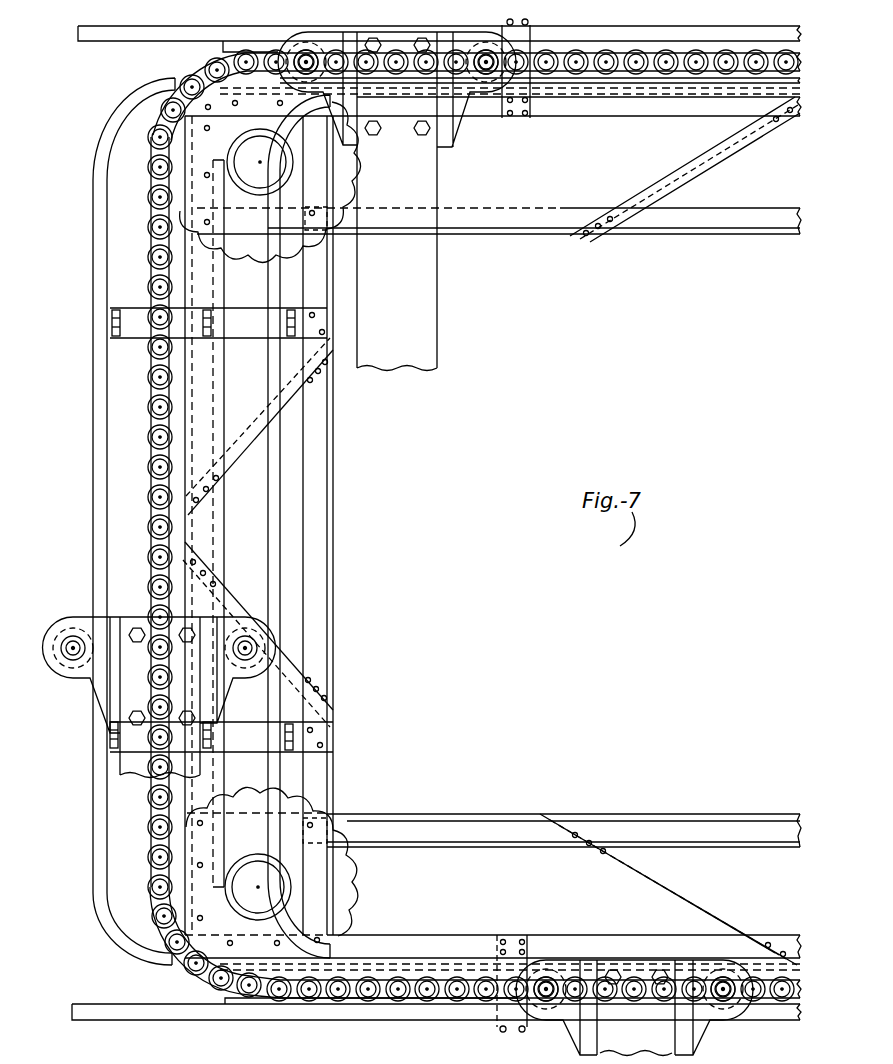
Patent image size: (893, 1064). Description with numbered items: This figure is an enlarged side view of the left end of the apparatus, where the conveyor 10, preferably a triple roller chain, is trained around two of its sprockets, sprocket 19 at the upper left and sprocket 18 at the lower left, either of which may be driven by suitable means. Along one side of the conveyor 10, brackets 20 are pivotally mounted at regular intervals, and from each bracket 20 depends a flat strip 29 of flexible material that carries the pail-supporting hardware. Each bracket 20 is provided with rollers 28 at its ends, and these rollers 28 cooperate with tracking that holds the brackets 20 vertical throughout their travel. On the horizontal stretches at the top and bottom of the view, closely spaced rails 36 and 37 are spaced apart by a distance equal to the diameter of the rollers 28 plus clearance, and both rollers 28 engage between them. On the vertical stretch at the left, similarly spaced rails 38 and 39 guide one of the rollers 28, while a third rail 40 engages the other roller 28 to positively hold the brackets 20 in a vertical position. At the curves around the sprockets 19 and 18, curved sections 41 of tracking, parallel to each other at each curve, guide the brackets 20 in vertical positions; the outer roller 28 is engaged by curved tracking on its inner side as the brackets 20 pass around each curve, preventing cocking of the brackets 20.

The conveyor 10 is at (148, 407).
The sprocket 18 is at (317, 847).
The sprocket 19 is at (257, 223).
The bracket 20 is at (447, 133).
The roller 28 is at (288, 45).
The flat strip 29 is at (417, 327).
The rail 36 is at (590, 90).
The rail 37 is at (600, 36).
The rail 38 is at (222, 538).
The rail 39 is at (272, 458).
The third rail 40 is at (93, 578).
The curved section of tracking 41 is at (122, 107).